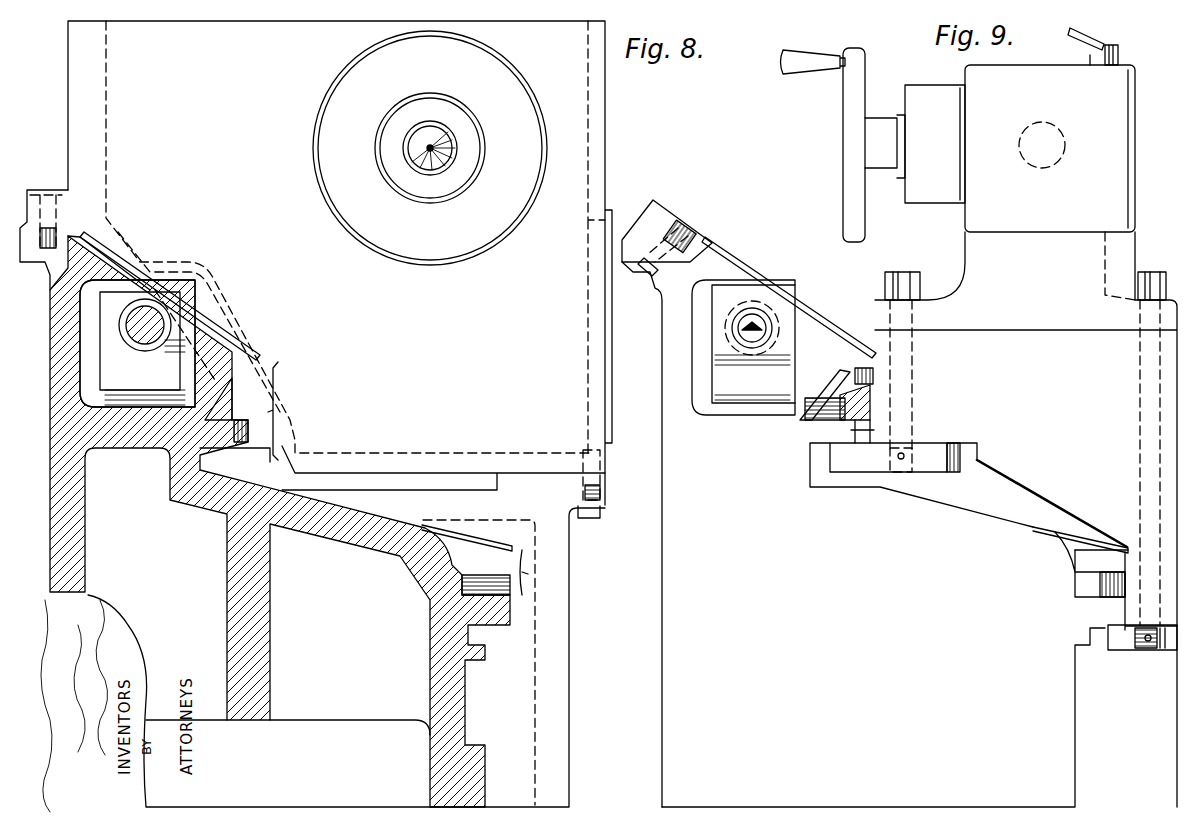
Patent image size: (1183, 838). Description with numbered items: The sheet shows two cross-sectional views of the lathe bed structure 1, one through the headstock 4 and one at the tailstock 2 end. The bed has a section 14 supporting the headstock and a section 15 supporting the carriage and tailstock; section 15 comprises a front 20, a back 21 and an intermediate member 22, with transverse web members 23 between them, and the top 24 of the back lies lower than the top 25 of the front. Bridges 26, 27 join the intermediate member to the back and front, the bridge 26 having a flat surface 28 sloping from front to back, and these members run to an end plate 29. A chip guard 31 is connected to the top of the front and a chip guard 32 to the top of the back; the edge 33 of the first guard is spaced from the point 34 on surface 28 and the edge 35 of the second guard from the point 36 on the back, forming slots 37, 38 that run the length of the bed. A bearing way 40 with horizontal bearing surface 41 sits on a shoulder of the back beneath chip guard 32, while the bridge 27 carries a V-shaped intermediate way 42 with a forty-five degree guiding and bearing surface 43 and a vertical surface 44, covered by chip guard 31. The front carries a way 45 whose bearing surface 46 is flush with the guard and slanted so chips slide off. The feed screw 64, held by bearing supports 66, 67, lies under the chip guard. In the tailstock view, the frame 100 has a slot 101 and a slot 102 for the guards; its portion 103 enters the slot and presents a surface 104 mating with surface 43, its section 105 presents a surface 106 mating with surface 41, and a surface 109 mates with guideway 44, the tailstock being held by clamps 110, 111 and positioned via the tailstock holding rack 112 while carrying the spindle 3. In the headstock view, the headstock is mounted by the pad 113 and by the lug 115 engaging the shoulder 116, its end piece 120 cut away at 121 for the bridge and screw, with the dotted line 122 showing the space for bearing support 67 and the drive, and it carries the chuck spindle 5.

In FIG. 8, the bed structure 1 is at (43, 501).
In FIG. 9, the bed structure 1 is at (655, 604).
In FIG. 9, the tailstock 2 is at (1137, 178).
In FIG. 9, the spindle 3 is at (1060, 136).
In FIG. 8, the headstock 4 is at (607, 130).
In FIG. 8, the chuck spindle 5 is at (455, 150).
In FIG. 8, the bed section 14 is at (578, 637).
In FIG. 8, the bed section 15 is at (60, 441).
In FIG. 9, the bed section 15 is at (680, 547).
In FIG. 8, the front 20 is at (70, 568).
In FIG. 8, the back 21 is at (436, 663).
In FIG. 8, the intermediate member 22 is at (262, 625).
In FIG. 8, the transverse web members 23 is at (190, 722).
In FIG. 8, the top of the back 24 is at (440, 560).
In FIG. 9, the top of the back 24 is at (1046, 538).
In FIG. 8, the top of the front 25 is at (58, 270).
In FIG. 9, the top of the front 25 is at (680, 270).
In FIG. 8, the bridge 26 is at (346, 546).
In FIG. 8, the bridge 27 is at (136, 458).
In FIG. 9, the bridge 27 is at (804, 430).
In FIG. 8, the flat surface 28 is at (356, 511).
In FIG. 9, the flat surface 28 is at (970, 508).
In FIG. 9, the end plate 29 is at (893, 640).
In FIG. 8, the chip guard 31 is at (205, 330).
In FIG. 9, the chip guard 31 is at (796, 305).
In FIG. 8, the chip guard 32 is at (470, 540).
In FIG. 9, the chip guard 32 is at (1076, 524).
In FIG. 8, the edge 33 is at (262, 360).
In FIG. 9, the edge 33 is at (878, 360).
In FIG. 8, the point 34 is at (262, 490).
In FIG. 9, the point 34 is at (868, 480).
In FIG. 8, the edge 35 is at (514, 549).
In FIG. 9, the edge 35 is at (1132, 553).
In FIG. 8, the point 36 is at (510, 590).
In FIG. 8, the slot 37 is at (285, 411).
In FIG. 8, the slot 38 is at (492, 662).
In FIG. 8, the bearing way 40 is at (456, 590).
In FIG. 9, the bearing way 40 is at (1078, 588).
In FIG. 8, the bearing surface 41 is at (446, 572).
In FIG. 9, the bearing surface 41 is at (1072, 573).
In FIG. 8, the intermediate way 42 is at (228, 400).
In FIG. 9, the intermediate way 42 is at (850, 398).
In FIG. 8, the guiding and bearing surface 43 is at (200, 395).
In FIG. 9, the guiding and bearing surface 43 is at (815, 390).
In FIG. 8, the guiding and bearing surface 44 is at (242, 444).
In FIG. 9, the guiding and bearing surface 44 is at (838, 412).
In FIG. 9, the way 45 is at (650, 212).
In FIG. 9, the bearing surface 46 is at (668, 212).
In FIG. 8, the feed screw 64 is at (122, 328).
In FIG. 9, the feed screw 64 is at (740, 329).
In FIG. 9, the bearing support 66 is at (716, 318).
In FIG. 8, the bearing support 67 is at (108, 345).
In FIG. 9, the frame 100 is at (1062, 400).
In FIG. 9, the slot 101 is at (868, 326).
In FIG. 9, the slot 102 is at (1080, 535).
In FIG. 9, the portion 103 is at (882, 378).
In FIG. 9, the surface 104 is at (822, 388).
In FIG. 9, the section 105 is at (1120, 565).
In FIG. 9, the surface 106 is at (1096, 595).
In FIG. 9, the surface 109 is at (857, 380).
In FIG. 9, the clamp 110 is at (932, 462).
In FIG. 9, the clamp 111 is at (1126, 650).
In FIG. 9, the tailstock holding rack 112 is at (880, 432).
In FIG. 8, the pad 113 is at (526, 472).
In FIG. 8, the lug 115 is at (45, 190).
In FIG. 8, the shoulder 116 is at (68, 238).
In FIG. 8, the end piece 120 is at (408, 301).
In FIG. 8, the cutaway 121 is at (215, 372).
In FIG. 8, the dotted line 122 is at (210, 290).